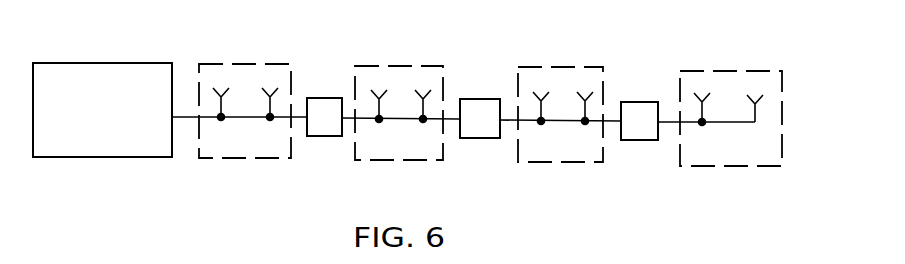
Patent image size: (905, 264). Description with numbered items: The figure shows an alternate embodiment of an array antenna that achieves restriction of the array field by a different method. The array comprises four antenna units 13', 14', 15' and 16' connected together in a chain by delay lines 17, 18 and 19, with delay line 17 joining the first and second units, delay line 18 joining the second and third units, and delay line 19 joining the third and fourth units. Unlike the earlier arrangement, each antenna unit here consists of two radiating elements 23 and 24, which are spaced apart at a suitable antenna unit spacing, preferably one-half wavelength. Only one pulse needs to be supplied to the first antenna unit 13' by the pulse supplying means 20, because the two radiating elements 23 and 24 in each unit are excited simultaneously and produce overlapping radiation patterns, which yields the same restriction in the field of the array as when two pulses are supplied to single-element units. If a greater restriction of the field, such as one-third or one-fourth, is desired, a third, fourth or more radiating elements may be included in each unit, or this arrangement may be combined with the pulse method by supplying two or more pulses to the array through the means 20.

The pulse supplying means 20 is at (95, 62).
The antenna unit 13' is at (244, 93).
The antenna unit 14' is at (399, 95).
The antenna unit 15' is at (560, 96).
The antenna unit 16' is at (730, 101).
The delay line 17 is at (323, 137).
The delay line 18 is at (487, 139).
The delay line 19 is at (638, 141).
The radiating element 23 is at (219, 119).
The radiating element 24 is at (272, 119).